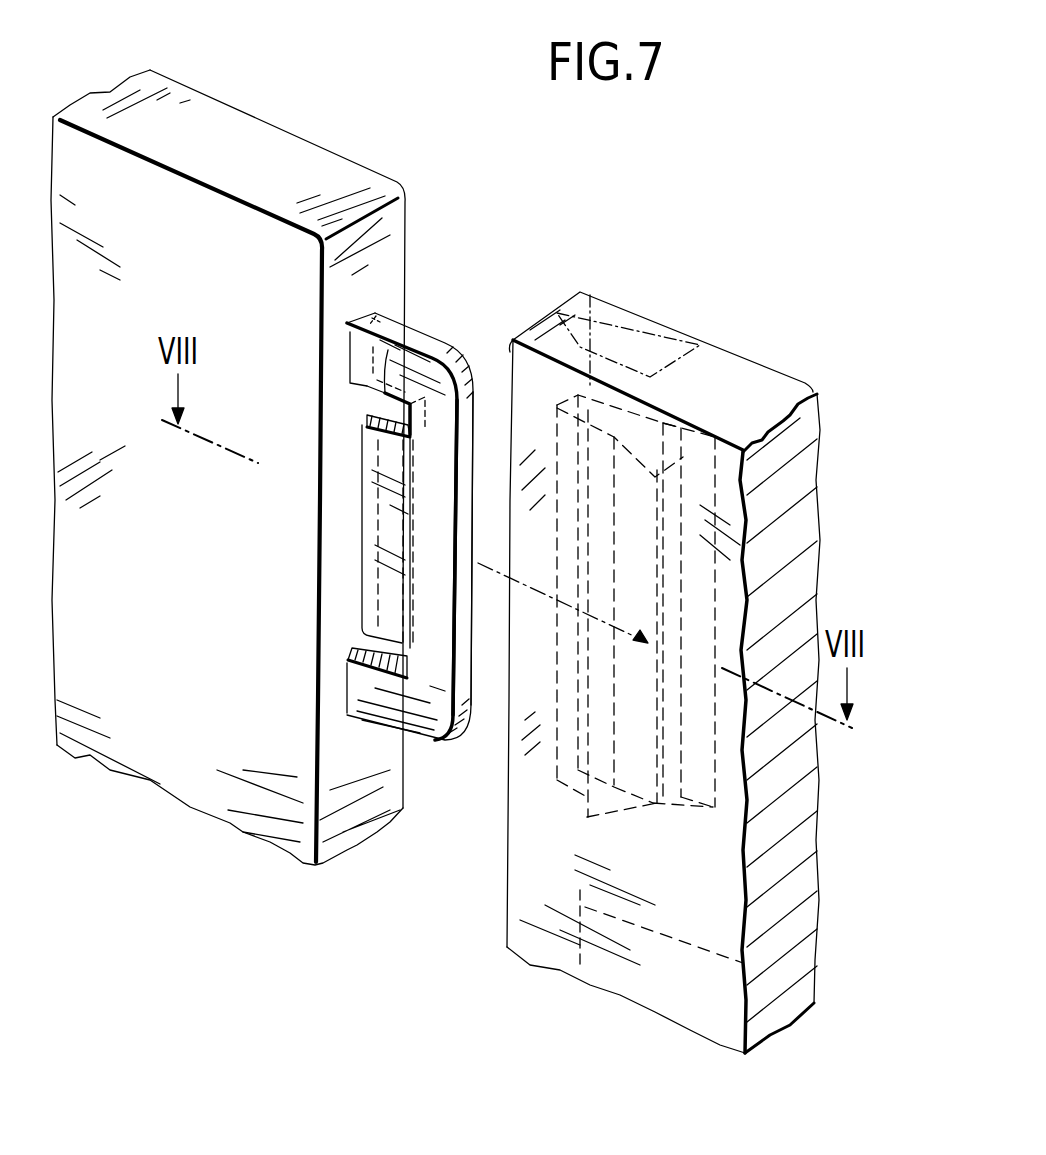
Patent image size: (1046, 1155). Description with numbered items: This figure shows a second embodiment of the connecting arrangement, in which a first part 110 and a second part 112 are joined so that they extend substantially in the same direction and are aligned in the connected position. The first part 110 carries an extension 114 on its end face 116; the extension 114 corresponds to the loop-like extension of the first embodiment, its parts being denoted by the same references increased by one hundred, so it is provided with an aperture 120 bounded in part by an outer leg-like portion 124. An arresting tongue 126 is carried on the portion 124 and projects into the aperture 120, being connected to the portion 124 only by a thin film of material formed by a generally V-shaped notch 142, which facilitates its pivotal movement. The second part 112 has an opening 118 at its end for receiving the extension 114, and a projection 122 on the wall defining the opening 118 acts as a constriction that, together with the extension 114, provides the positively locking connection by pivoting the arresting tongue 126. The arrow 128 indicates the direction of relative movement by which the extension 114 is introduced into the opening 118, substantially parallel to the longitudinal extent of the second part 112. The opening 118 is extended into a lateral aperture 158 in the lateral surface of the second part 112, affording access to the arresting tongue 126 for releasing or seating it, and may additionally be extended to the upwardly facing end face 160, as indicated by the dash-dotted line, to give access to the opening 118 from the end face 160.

The first part 110 is at (290, 157).
The second part 112 is at (682, 1007).
The extension 114 is at (466, 342).
The end face 116 is at (388, 262).
The opening 118 is at (590, 408).
The aperture 120 is at (393, 352).
The projection 122 is at (660, 412).
The outer leg-like portion 124 is at (448, 658).
The arresting tongue 126 is at (362, 512).
The arrow 128 is at (647, 641).
The V-shaped notch 142 is at (400, 548).
The lateral aperture 158 is at (810, 392).
The end face 160 is at (708, 352).